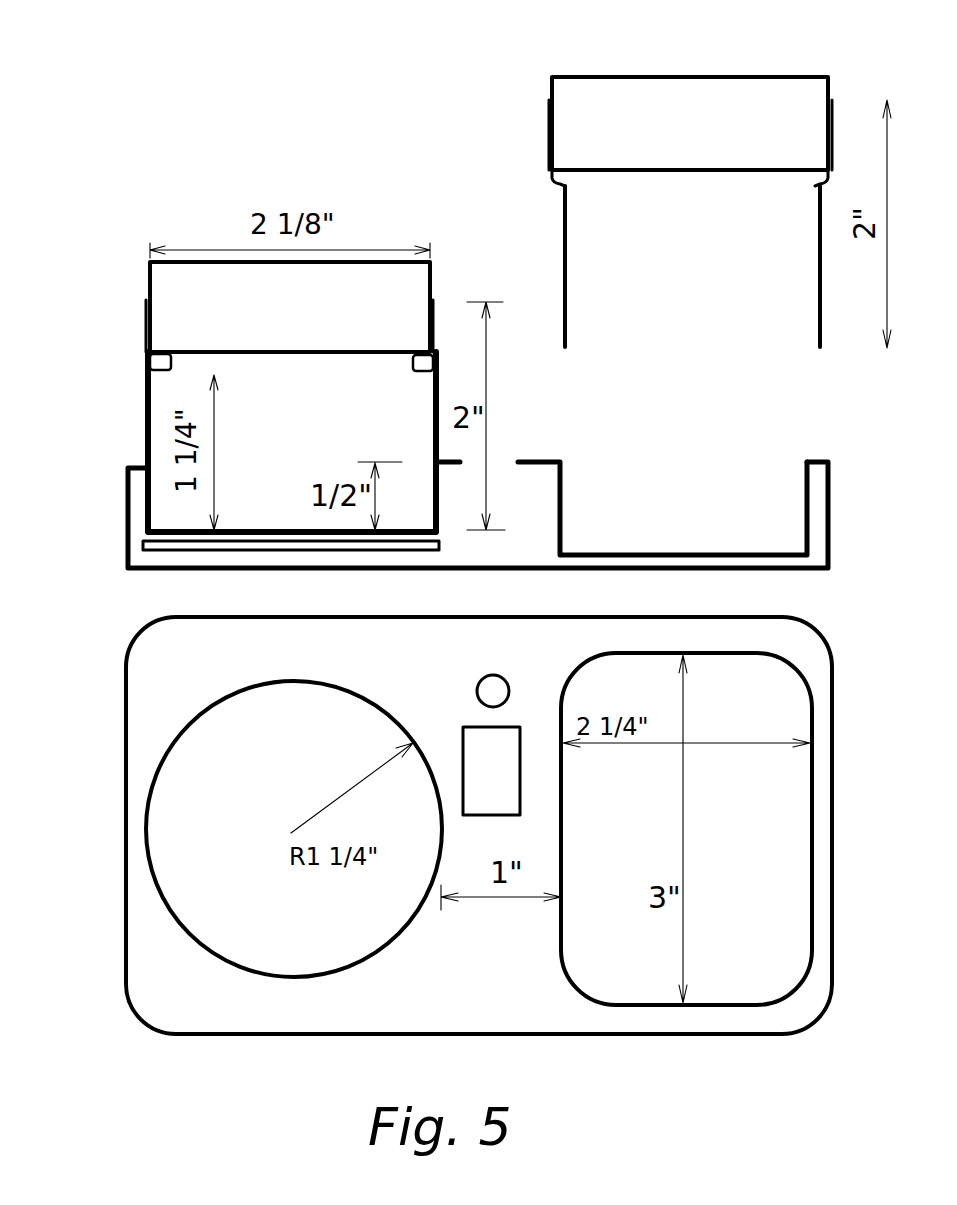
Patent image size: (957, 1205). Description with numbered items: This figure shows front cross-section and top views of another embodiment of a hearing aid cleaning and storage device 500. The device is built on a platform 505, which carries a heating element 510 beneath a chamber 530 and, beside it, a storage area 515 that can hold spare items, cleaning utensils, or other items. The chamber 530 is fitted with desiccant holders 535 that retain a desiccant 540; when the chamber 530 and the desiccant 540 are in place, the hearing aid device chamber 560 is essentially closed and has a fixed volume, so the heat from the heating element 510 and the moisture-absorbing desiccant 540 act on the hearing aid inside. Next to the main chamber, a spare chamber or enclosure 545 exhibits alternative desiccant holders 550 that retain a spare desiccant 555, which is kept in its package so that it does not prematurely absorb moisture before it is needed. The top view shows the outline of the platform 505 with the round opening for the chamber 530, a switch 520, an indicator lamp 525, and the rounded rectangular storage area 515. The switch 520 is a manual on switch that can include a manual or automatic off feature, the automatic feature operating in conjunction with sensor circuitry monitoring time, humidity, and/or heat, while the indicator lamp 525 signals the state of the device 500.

The hearing aid cleaning and storage device 500 is at (137, 162).
The platform 505 is at (122, 532).
The heating element 510 is at (430, 550).
The storage area 515 is at (756, 460).
The switch 520 is at (462, 727).
The indicator lamp 525 is at (495, 674).
The chamber 530 is at (146, 422).
The desiccant holders 535 is at (148, 355).
The desiccant 540 is at (333, 258).
The spare chamber or enclosure 545 is at (563, 283).
The alternative desiccant holders 550 is at (553, 176).
The spare desiccant 555 is at (722, 75).
The hearing aid device chamber 560 is at (382, 445).